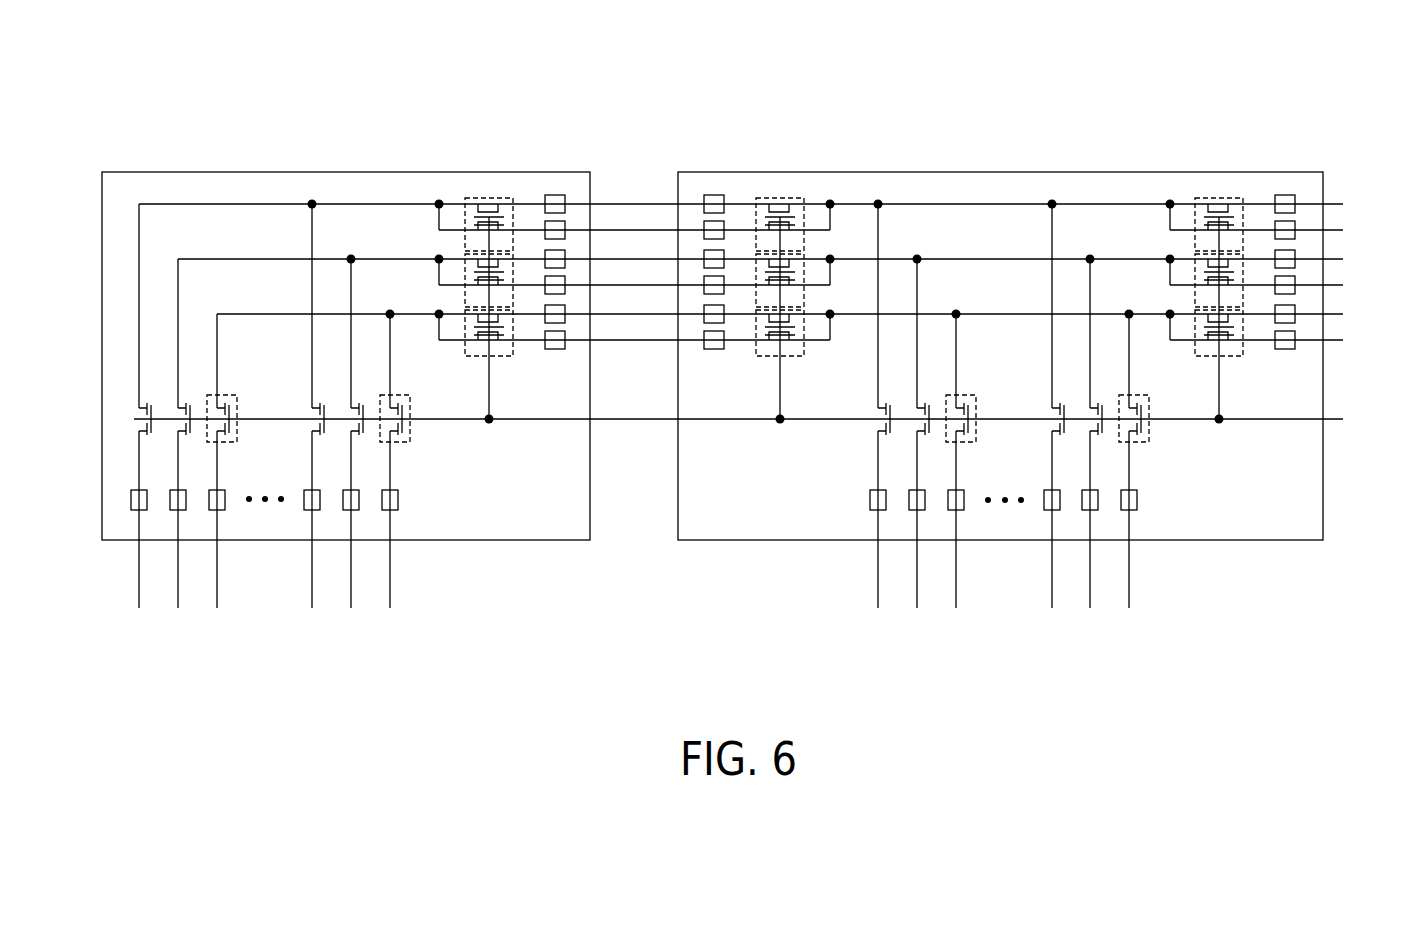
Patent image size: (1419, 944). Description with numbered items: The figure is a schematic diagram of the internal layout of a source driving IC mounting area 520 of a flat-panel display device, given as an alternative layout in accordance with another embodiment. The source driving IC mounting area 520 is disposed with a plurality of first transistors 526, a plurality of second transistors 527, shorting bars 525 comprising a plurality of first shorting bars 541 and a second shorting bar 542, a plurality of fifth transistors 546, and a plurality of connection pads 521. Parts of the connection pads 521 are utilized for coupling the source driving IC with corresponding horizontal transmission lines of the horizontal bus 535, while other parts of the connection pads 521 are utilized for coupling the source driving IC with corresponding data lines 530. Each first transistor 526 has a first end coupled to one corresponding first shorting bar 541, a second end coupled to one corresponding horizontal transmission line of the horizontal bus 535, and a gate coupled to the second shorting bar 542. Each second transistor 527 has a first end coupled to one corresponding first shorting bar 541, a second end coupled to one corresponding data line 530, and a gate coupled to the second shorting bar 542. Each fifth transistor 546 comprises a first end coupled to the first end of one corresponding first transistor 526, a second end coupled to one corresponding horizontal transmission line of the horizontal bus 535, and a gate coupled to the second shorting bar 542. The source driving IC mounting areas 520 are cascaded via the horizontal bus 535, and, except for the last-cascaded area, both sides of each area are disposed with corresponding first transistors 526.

The source driving IC mounting area 520 is at (272, 172).
The connection pad 521 is at (708, 195).
The shorting bars 525 is at (738, 233).
The first transistor 526 is at (839, 265).
The second transistor 527 is at (237, 442).
The data line 530 is at (960, 615).
The horizontal bus 535 is at (627, 197).
The first shorting bar 541 is at (1000, 314).
The second shorting bar 542 is at (992, 418).
The fifth transistor 546 is at (465, 232).